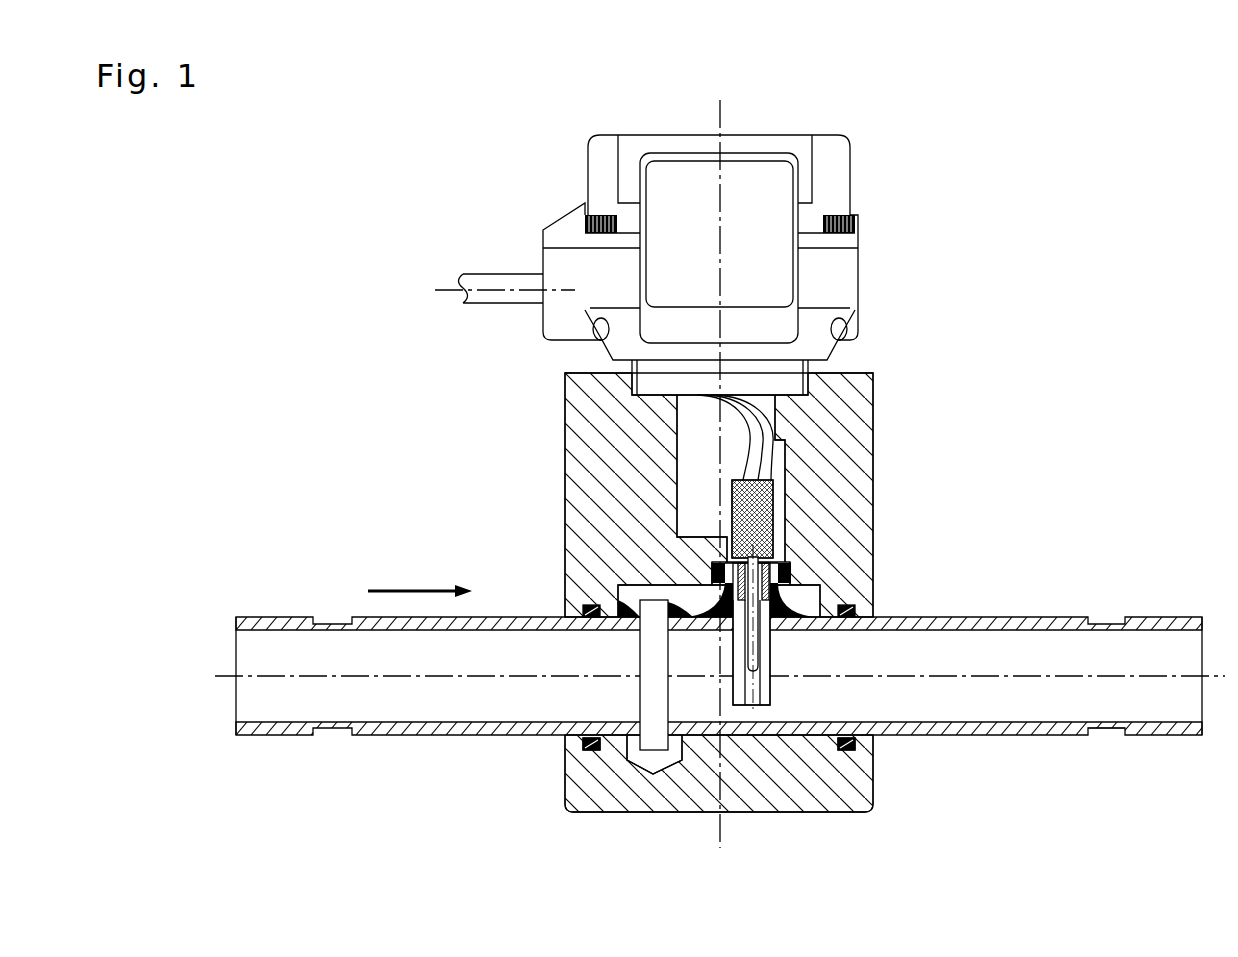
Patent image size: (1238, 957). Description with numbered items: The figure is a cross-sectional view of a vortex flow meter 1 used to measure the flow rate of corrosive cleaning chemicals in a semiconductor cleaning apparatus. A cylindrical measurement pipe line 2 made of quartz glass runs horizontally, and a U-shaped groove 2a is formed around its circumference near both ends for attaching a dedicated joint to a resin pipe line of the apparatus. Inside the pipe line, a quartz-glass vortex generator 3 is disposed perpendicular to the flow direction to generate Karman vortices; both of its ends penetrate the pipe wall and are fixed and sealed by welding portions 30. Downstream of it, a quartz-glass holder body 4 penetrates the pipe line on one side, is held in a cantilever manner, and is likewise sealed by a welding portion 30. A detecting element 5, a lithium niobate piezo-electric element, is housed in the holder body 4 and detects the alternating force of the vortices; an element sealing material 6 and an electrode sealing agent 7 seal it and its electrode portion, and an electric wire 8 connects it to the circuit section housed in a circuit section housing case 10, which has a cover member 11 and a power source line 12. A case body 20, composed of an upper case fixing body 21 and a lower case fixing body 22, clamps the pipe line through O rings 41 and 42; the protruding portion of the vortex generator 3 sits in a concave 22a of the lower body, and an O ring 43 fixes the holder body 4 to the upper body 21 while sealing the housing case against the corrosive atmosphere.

The vortex flow meter 1 is at (1079, 398).
The measurement pipe line 2 is at (990, 617).
The U-shaped groove 2a is at (1105, 733).
The vortex generator 3 is at (637, 693).
The holder body 4 is at (765, 687).
The detecting element 5 is at (762, 642).
The element sealing material 6 is at (791, 567).
The electrode sealing agent 7 is at (779, 496).
The electric wire 8 is at (753, 438).
The circuit section housing case 10 is at (838, 275).
The cover member 11 is at (833, 165).
The power source line 12 is at (497, 306).
The case body 20 is at (873, 815).
The upper case fixing body 21 is at (867, 465).
The lower case fixing body 22 is at (865, 771).
The concave 22a is at (686, 760).
The welding portions 30 is at (635, 603).
The O ring 41 is at (587, 746).
The O ring 42 is at (835, 751).
The O ring 43 is at (713, 565).